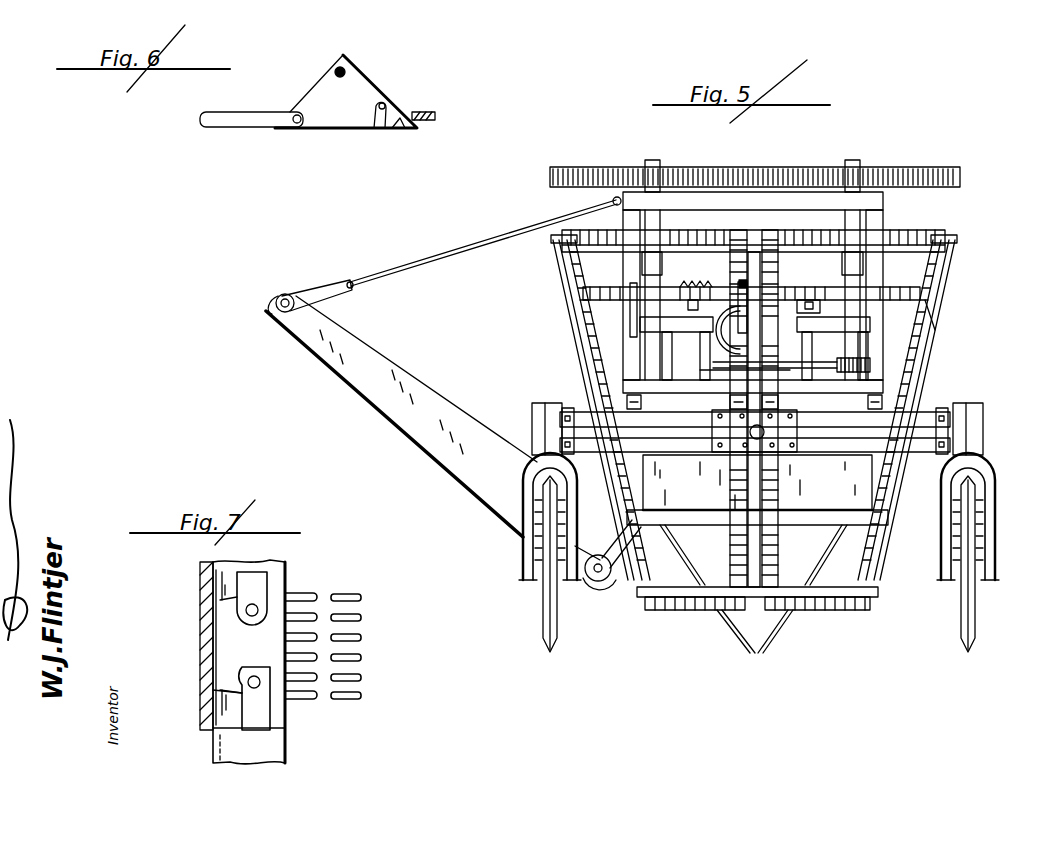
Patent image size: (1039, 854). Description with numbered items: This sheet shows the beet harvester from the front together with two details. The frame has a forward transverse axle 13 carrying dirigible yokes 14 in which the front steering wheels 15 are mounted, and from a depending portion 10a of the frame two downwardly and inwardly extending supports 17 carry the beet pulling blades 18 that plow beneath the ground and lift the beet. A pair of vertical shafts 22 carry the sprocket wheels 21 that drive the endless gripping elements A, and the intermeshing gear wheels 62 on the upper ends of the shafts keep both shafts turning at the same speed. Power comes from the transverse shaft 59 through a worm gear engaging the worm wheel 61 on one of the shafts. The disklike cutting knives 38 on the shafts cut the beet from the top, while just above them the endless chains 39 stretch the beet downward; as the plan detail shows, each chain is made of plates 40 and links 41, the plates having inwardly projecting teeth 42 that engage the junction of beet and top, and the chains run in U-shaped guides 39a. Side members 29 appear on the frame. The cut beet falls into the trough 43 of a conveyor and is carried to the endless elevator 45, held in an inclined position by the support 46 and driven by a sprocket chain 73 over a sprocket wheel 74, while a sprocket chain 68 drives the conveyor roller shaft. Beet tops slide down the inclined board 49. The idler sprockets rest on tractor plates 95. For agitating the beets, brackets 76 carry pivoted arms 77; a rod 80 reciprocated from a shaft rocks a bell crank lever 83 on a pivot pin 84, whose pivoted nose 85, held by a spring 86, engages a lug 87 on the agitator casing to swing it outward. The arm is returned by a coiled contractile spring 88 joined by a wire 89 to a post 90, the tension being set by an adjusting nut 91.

In FIG. 5, the depending portion of the frame 10a is at (880, 504).
In FIG. 5, the transverse axle 13 is at (585, 415).
In FIG. 5, the dirigible yokes 14 is at (525, 508).
In FIG. 5, the front steering wheels 15 is at (540, 610).
In FIG. 5, the supports 17 is at (718, 613).
In FIG. 5, the beet pulling blades 18 is at (750, 655).
In FIG. 5, the sprocket wheels 21 is at (710, 240).
In FIG. 5, the vertical shafts 22 is at (656, 160).
In FIG. 5, the sloped side bar 29 is at (590, 357).
In FIG. 5, the disklike cutting knives 38 is at (640, 314).
In FIG. 7, the endless chains 39 is at (208, 620).
In FIG. 5, the endless chains 39 is at (612, 298).
In FIG. 7, the U-shaped guides 39a is at (207, 698).
In FIG. 7, the plates 40 is at (228, 655).
In FIG. 7, the links 41 is at (262, 575).
In FIG. 7, the teeth 42 is at (353, 592).
In FIG. 5, the trough 43 is at (675, 491).
In FIG. 5, the endless elevator 45 is at (397, 427).
In FIG. 5, the support 46 is at (460, 256).
In FIG. 5, the inclined board 49 is at (796, 320).
In FIG. 5, the transverse shaft 59 is at (780, 366).
In FIG. 5, the worm wheel 61 is at (872, 362).
In FIG. 5, the intermeshing gear wheels 62 is at (616, 167).
In FIG. 5, the sprocket chain 68 is at (660, 468).
In FIG. 5, the sprocket chain 73 is at (624, 584).
In FIG. 5, the sprocket wheel 74 is at (586, 588).
In FIG. 5, the supports or brackets 76 is at (748, 328).
In FIG. 5, the agitator arm 77 is at (716, 340).
In FIG. 6, the rod 80 is at (213, 122).
In FIG. 6, the bell crank lever 83 is at (318, 118).
In FIG. 6, the pivot pin 84 is at (334, 70).
In FIG. 6, the pivoted nose 85 is at (398, 132).
In FIG. 6, the spring 86 is at (372, 130).
In FIG. 6, the lug 87 is at (438, 104).
In FIG. 5, the coiled contractile spring 88 is at (705, 281).
In FIG. 5, the wire 89 is at (683, 287).
In FIG. 5, the post 90 is at (633, 318).
In FIG. 5, the adjusting nut 91 is at (630, 290).
In FIG. 5, the tractor plates 95 is at (674, 612).
In FIG. 5, the endless gripping elements A is at (935, 325).